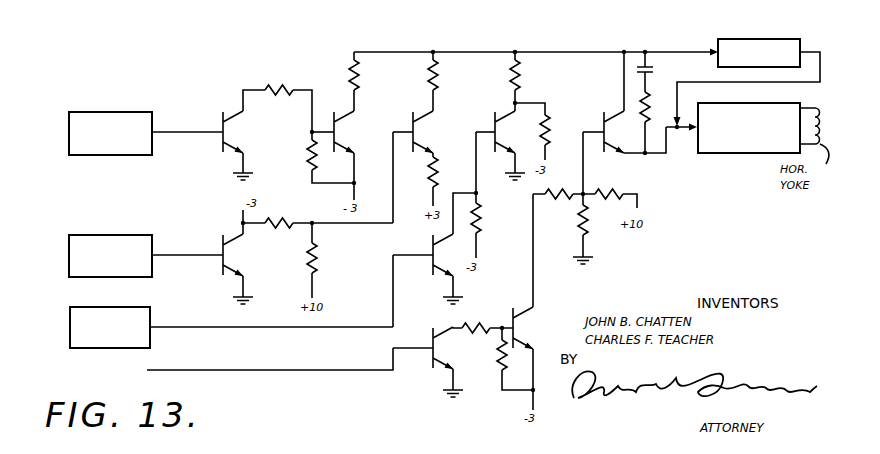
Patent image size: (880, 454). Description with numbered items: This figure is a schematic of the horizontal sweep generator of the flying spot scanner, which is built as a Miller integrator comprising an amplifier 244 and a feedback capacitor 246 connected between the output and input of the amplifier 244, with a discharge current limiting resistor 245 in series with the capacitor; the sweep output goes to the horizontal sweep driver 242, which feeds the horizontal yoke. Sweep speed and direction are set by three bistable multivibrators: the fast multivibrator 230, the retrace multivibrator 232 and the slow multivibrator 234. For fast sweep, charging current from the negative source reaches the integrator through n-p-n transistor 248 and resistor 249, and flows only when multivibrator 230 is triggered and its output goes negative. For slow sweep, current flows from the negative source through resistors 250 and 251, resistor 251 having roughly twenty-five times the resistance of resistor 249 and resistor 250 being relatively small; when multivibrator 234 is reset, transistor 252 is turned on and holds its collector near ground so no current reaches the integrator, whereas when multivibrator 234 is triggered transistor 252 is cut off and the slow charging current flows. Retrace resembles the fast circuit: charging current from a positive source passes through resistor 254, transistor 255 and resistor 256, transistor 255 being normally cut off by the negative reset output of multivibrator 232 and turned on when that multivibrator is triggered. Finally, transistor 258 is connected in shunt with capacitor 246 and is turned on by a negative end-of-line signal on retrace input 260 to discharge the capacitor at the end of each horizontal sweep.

The fast bistable multivibrator 230 is at (133, 112).
The retrace bistable multivibrator 232 is at (128, 234).
The slow bistable multivibrator 234 is at (86, 307).
The horizontal sweep driver 242 is at (734, 153).
The amplifier 244 is at (752, 39).
The discharge current limiting resistor 245 is at (650, 112).
The feedback capacitor 246 is at (656, 74).
The n-p-n transistor 248 is at (331, 113).
The resistor 249 is at (352, 66).
The resistor 250 is at (549, 126).
The resistor 251 is at (520, 85).
The transistor 252 is at (494, 120).
The resistor 254 is at (441, 173).
The transistor 255 is at (428, 118).
The resistor 256 is at (445, 90).
The transistor 258 is at (640, 102).
The retrace input 260 is at (247, 371).